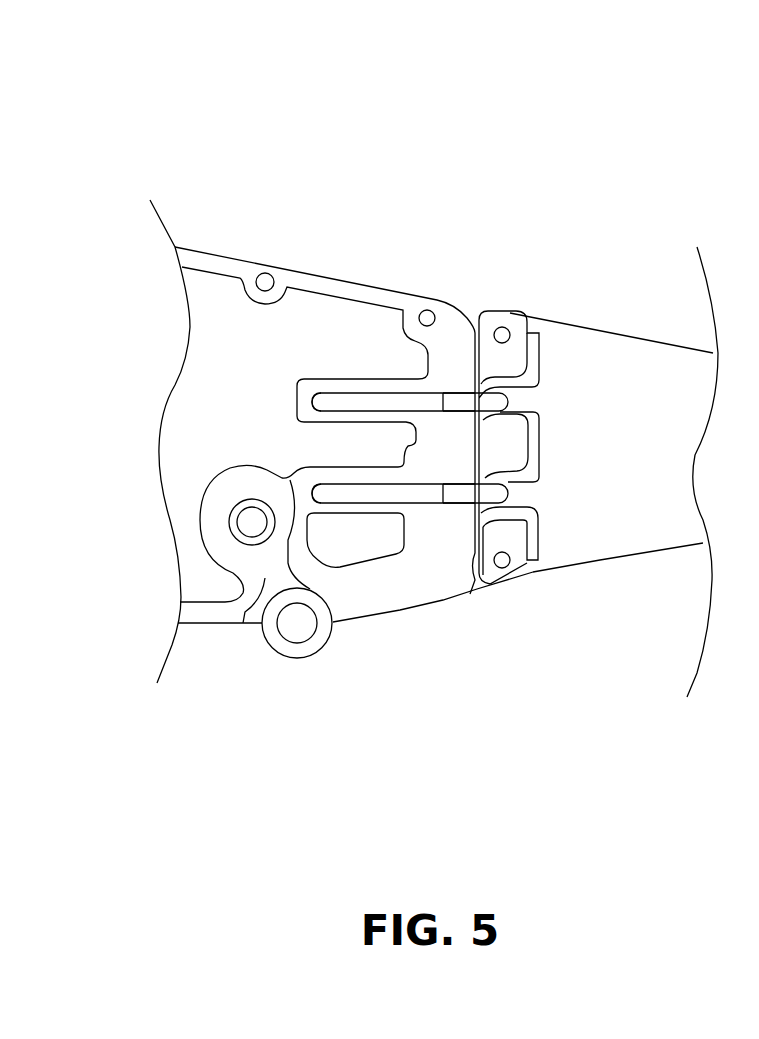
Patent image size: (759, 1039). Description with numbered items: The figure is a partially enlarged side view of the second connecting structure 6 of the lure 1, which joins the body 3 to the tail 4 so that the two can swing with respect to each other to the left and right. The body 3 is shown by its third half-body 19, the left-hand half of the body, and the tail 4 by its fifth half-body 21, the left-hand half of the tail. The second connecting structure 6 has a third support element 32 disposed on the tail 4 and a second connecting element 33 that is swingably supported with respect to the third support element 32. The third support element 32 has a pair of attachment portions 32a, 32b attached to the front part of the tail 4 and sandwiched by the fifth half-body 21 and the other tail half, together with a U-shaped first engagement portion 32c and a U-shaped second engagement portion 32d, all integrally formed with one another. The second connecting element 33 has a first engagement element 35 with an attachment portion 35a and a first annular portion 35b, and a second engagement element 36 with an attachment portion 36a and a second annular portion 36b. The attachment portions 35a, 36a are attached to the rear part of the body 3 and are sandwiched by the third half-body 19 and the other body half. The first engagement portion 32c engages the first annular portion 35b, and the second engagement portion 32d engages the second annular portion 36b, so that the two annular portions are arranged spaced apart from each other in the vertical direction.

The lure 1 is at (586, 131).
The body 3 is at (278, 201).
The tail 4 is at (658, 271).
The second connecting structure 6 is at (522, 762).
The third half-body 19 is at (225, 263).
The fifth half-body 21 is at (608, 360).
The third support element 32 is at (535, 564).
The attachment portion 32a is at (535, 355).
The attachment portion 32b is at (538, 542).
The first engagement portion 32c is at (499, 383).
The second engagement portion 32d is at (503, 506).
The second connecting element 33 is at (365, 527).
The first engagement element 35 is at (378, 387).
The attachment portion 35a is at (320, 402).
The first annular portion 35b is at (463, 392).
The second engagement element 36 is at (335, 505).
The attachment portion 36a is at (323, 493).
The second annular portion 36b is at (457, 490).